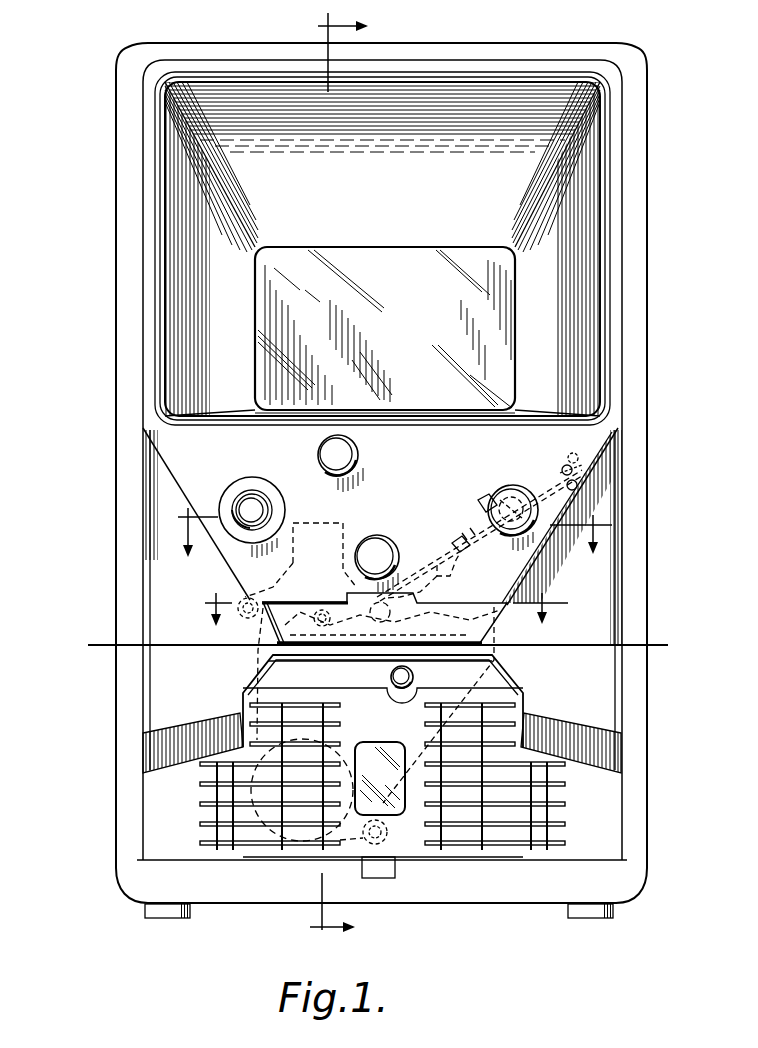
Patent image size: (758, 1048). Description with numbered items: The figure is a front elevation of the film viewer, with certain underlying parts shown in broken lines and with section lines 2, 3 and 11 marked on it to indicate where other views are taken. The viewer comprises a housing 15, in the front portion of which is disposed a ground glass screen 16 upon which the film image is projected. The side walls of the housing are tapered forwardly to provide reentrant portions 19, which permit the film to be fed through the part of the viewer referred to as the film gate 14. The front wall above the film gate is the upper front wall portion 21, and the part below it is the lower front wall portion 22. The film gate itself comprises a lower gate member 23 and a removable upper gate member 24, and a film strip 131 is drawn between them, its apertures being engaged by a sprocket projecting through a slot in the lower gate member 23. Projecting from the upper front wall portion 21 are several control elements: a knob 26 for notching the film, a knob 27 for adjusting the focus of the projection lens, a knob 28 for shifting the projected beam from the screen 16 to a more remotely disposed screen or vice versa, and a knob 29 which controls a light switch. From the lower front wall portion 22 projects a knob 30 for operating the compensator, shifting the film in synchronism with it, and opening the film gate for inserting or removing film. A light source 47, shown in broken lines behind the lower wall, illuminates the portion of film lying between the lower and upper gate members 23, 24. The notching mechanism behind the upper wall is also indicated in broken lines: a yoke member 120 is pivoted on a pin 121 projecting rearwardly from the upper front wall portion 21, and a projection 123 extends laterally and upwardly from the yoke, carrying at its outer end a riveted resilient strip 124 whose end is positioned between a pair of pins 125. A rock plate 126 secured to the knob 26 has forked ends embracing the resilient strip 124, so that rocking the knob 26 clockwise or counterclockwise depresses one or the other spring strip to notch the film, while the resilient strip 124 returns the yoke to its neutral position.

The housing 15 is at (633, 238).
The ground glass screen 16 is at (433, 304).
The reentrant portions 19 is at (160, 573).
The upper front wall portion 21 is at (456, 490).
The upper gate member 24 is at (463, 634).
The film strip 131 is at (100, 642).
The film gate 14 is at (510, 656).
The lower gate member 23 is at (457, 652).
The knob 30 is at (390, 677).
The light source 47 is at (307, 810).
The lower front wall portion 22 is at (394, 739).
The knob 26 is at (508, 488).
The knob 27 is at (382, 544).
The knob 28 is at (360, 457).
The knob 29 is at (258, 502).
The resilient strip 124 is at (525, 494).
The pins 125 is at (571, 466).
The rock plate 126 is at (483, 504).
The projection 123 is at (437, 574).
The yoke member 120 is at (296, 605).
The pin 121 is at (325, 610).
The section line 2- 2 is at (326, 478).
The section line 3- 3 is at (387, 532).
The section line 11- 11 is at (377, 609).